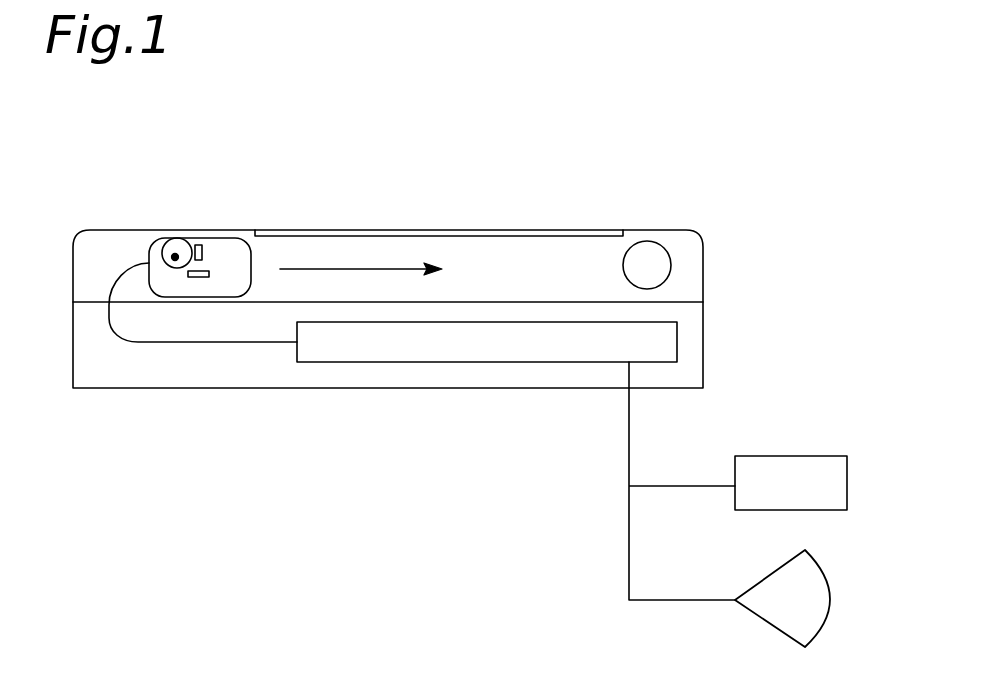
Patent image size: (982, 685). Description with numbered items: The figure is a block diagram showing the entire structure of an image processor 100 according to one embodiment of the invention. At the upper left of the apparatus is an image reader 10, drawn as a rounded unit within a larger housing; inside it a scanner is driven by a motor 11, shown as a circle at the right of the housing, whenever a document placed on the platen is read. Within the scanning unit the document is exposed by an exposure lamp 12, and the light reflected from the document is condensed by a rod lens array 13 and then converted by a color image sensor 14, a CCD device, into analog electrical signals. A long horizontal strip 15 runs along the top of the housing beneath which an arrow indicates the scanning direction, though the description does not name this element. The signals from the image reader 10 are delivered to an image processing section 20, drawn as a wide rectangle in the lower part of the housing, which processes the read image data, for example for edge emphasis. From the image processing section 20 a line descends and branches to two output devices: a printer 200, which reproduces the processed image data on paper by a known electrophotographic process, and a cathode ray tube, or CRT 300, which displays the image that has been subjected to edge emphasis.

The image processor 100 is at (710, 258).
The image reader 10 is at (262, 253).
The motor 11 is at (647, 241).
The exposure lamp 12 is at (160, 242).
The rod lens array 13 is at (211, 250).
The color image sensor 14 is at (193, 279).
The guide rail 15 is at (391, 229).
The image processing section 20 is at (428, 362).
The printer 200 is at (792, 456).
The cathode ray tube (CRT) 300 is at (820, 558).